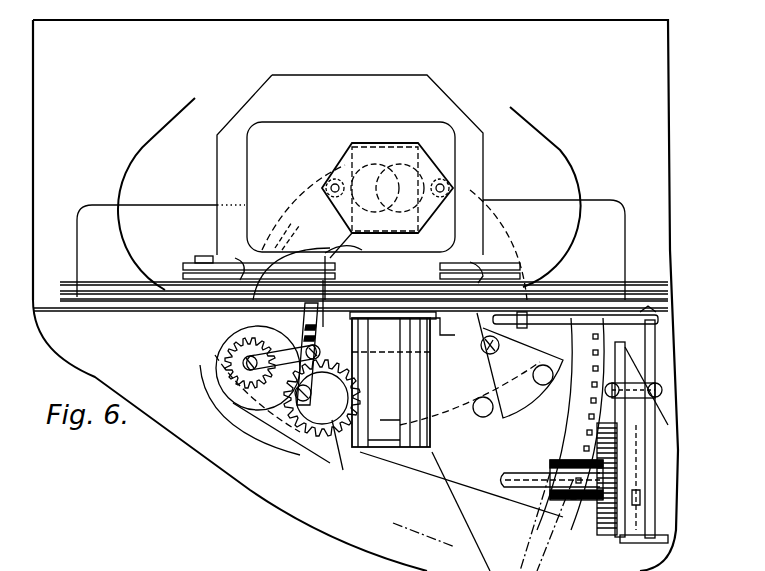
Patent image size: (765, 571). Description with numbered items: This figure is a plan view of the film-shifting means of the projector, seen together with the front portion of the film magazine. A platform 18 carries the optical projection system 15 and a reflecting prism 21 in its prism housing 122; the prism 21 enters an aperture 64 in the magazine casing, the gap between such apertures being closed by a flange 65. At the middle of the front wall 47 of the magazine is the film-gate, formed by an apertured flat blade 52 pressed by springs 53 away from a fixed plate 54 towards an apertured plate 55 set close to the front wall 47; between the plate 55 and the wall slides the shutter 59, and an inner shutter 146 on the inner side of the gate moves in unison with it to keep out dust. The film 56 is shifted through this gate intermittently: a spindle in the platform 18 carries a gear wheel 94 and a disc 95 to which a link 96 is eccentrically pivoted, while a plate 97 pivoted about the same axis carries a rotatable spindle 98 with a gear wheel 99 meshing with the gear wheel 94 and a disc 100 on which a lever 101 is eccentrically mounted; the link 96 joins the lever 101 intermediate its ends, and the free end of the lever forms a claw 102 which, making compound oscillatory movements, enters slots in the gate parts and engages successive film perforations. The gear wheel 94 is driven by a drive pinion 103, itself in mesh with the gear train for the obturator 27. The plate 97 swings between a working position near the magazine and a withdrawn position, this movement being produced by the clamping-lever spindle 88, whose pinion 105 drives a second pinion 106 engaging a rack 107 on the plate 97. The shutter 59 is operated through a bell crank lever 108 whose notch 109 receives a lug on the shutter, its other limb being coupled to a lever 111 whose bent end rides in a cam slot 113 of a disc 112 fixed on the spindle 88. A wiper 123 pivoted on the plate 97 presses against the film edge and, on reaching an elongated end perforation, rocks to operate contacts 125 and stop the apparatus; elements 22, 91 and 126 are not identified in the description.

The optical projection system 15 is at (431, 440).
The platform 18 is at (148, 418).
The reflecting prism 21 is at (287, 215).
The frame 22 is at (209, 568).
The obturator 27 is at (517, 226).
The front wall 47 is at (627, 290).
The apertured flat blade 52 is at (186, 275).
The springs 53 is at (242, 262).
The fixed plate 54 is at (204, 256).
The apertured plate 55 is at (142, 306).
The film strip 56 is at (143, 149).
The sliding shutter 59 is at (512, 277).
The aperture 64 is at (300, 127).
The flange 65 is at (217, 178).
The spindle 88 is at (510, 474).
The plate 91 is at (447, 472).
The gear wheel 94 is at (236, 361).
The disc 95 is at (240, 398).
The link 96 is at (233, 343).
The plate 97 is at (393, 523).
The rotatable spindle 98 is at (318, 432).
The gear wheel 99 is at (300, 432).
The disc 100 is at (343, 470).
The lever 101 is at (268, 420).
The claw 102 is at (285, 342).
The drive pinion 103 is at (335, 258).
The pinion 105 is at (602, 526).
The second pinion 106 is at (560, 458).
The rack 107 is at (576, 424).
The bell crank lever 108 is at (648, 306).
The open notch 109 is at (555, 322).
The lever 111 is at (652, 426).
The disc 112 is at (636, 522).
The cam slot 113 is at (640, 497).
The prism housing 122 is at (383, 143).
The wiper 123 is at (450, 342).
The contacts 125 is at (533, 377).
The hole 126 is at (483, 418).
The inner shutter 146 is at (355, 245).